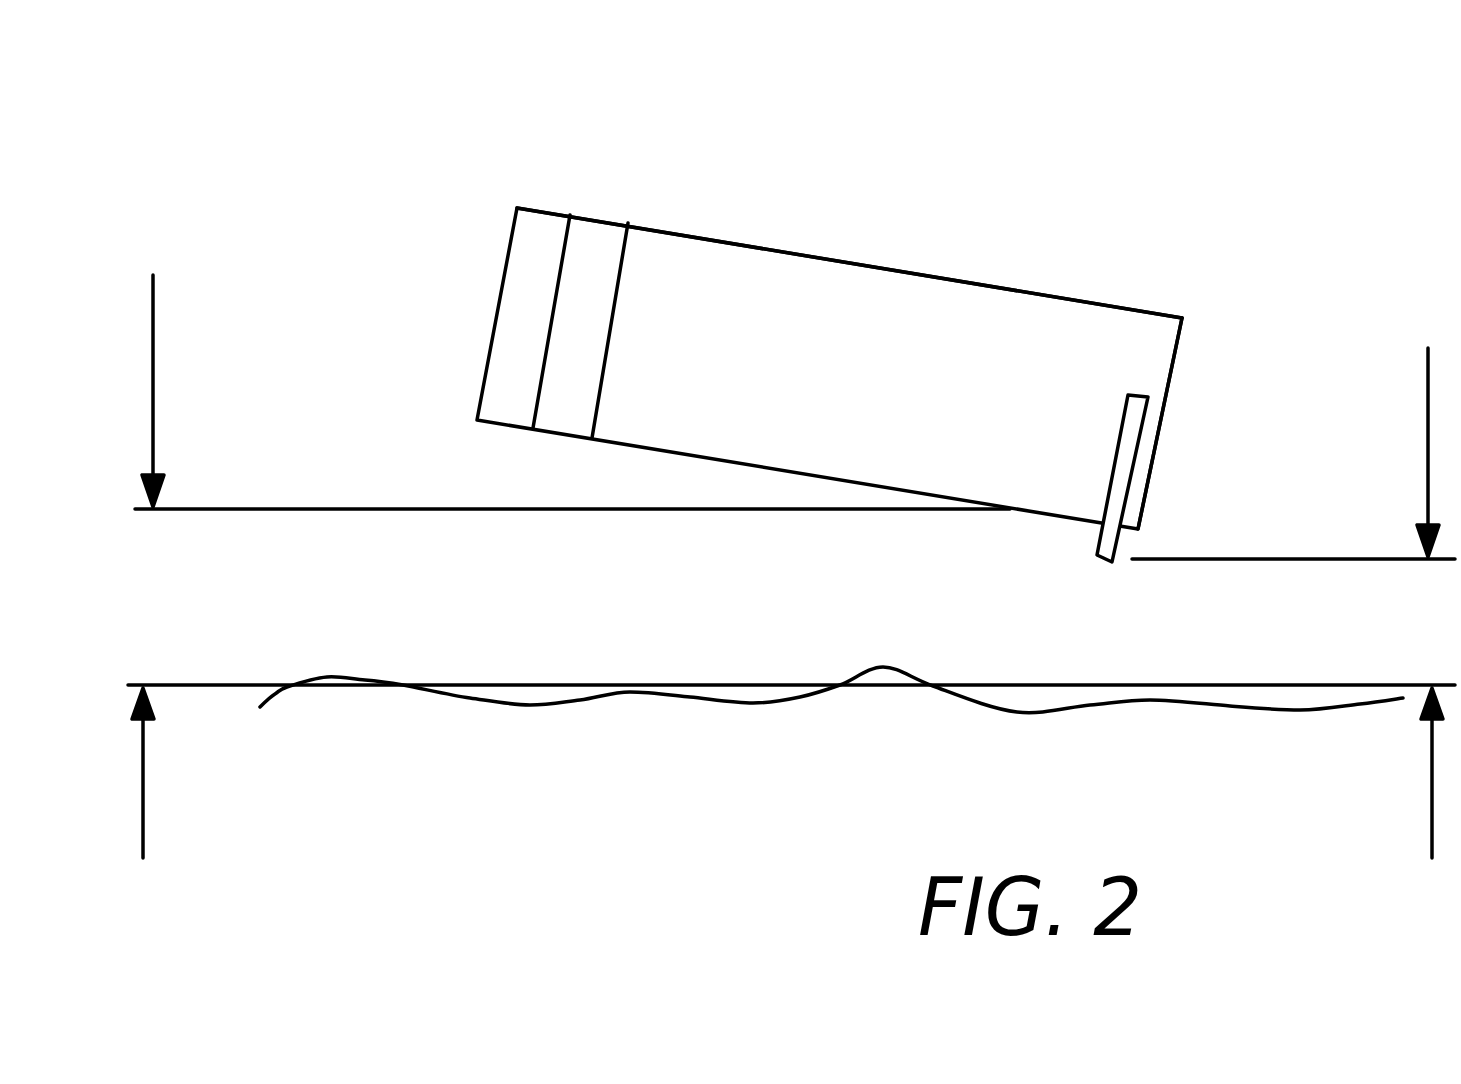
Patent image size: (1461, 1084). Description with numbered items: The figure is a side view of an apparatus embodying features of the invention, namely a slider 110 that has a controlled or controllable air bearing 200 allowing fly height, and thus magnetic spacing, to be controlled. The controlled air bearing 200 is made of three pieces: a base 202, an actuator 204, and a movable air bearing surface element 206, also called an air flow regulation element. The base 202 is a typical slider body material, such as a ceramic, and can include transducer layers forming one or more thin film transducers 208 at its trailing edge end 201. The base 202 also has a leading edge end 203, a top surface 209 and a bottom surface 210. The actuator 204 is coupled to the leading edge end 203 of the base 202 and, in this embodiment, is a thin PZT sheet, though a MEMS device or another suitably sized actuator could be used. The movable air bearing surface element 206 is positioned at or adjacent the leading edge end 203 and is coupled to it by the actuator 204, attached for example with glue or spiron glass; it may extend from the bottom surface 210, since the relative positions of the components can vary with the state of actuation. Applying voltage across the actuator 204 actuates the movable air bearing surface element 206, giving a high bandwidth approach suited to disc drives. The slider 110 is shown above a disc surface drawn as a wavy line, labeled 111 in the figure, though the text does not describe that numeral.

The slider 110 is at (804, 342).
The disk 111 is at (327, 630).
The controlled air bearing 200 is at (487, 482).
The trailing edge end 201 is at (1170, 385).
The base 202 is at (983, 282).
The leading edge end 203 is at (600, 393).
The actuator 204 is at (607, 235).
The movable air bearing surface element 206 is at (568, 213).
The thin film transducers 208 is at (1118, 547).
The top surface 209 is at (912, 227).
The bottom surface 210 is at (822, 553).